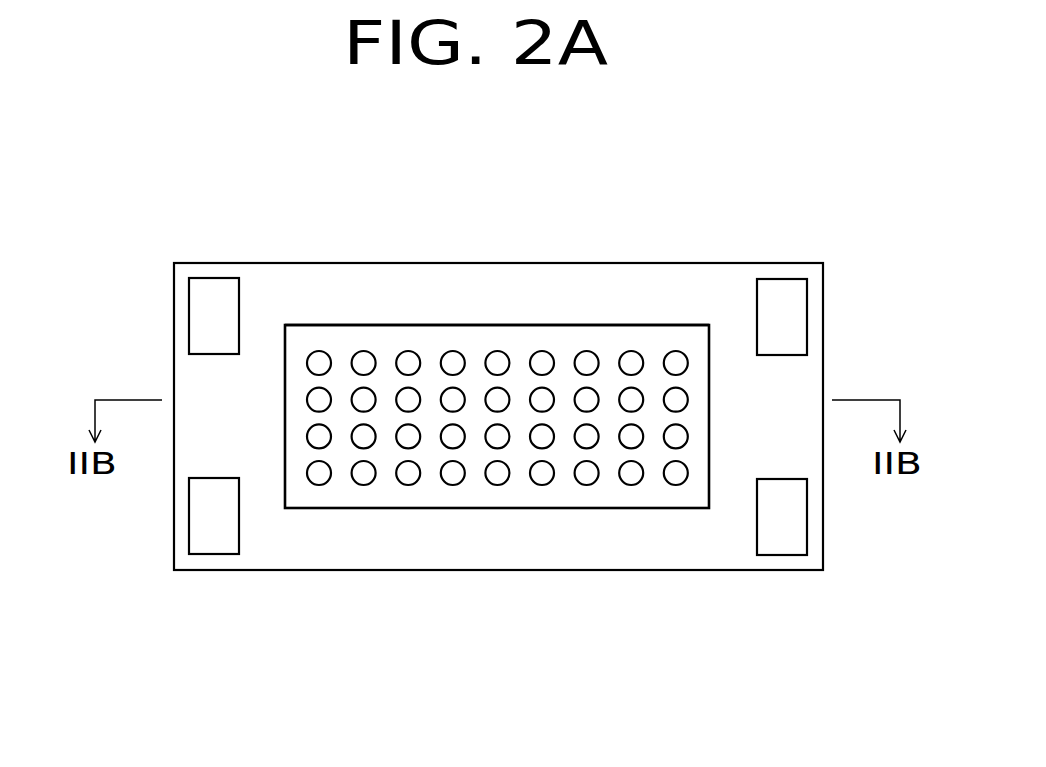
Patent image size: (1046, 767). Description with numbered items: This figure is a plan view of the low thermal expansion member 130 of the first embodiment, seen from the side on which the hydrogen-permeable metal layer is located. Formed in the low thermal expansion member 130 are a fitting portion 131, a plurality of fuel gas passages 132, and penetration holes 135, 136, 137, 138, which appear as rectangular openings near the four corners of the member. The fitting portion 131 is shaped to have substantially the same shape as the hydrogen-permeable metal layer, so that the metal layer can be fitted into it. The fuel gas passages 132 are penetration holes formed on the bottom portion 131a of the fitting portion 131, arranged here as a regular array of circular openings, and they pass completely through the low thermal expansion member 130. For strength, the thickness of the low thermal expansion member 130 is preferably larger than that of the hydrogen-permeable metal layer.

The low thermal expansion member 130 is at (727, 242).
The fitting portion 131 is at (481, 325).
The bottom portion of the fitting portion 131a is at (346, 342).
The fuel gas passages 132 is at (548, 393).
The penetration hole 135 is at (807, 522).
The penetration hole 136 is at (807, 320).
The penetration hole 137 is at (189, 304).
The penetration hole 138 is at (189, 520).